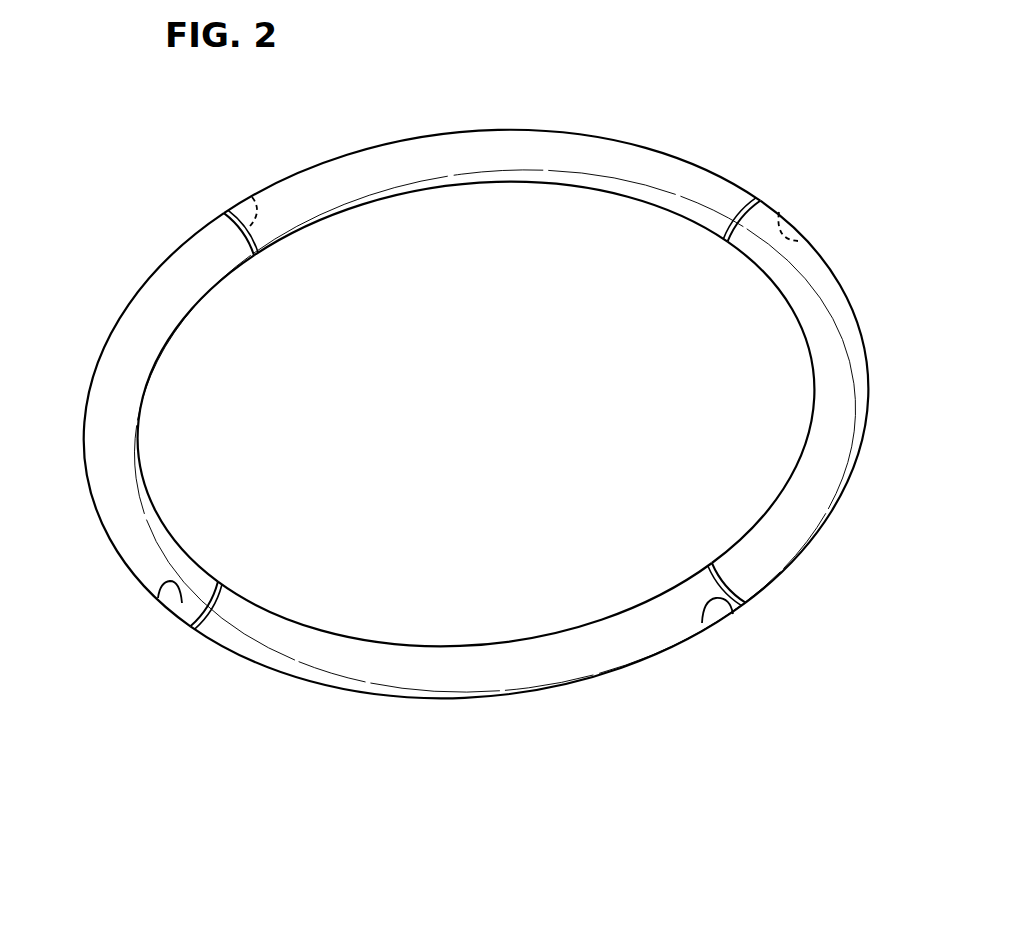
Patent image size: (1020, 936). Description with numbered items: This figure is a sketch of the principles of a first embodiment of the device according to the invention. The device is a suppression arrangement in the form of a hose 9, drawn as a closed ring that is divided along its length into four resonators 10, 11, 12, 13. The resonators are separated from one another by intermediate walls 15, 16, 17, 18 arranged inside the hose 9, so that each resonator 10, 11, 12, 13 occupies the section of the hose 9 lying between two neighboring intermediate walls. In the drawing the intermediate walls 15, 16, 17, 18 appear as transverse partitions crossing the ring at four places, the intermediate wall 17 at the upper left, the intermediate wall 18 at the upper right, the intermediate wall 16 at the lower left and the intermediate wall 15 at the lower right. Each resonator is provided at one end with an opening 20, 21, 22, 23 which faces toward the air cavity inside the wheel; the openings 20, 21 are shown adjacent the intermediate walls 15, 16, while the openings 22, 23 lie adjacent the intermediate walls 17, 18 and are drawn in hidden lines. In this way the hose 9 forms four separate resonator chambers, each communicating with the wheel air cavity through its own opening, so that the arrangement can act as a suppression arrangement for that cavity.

The hose 9 is at (597, 131).
The resonator 10 is at (846, 465).
The resonator 11 is at (562, 665).
The resonator 12 is at (105, 463).
The resonator 13 is at (387, 167).
The intermediate wall 15 is at (752, 605).
The intermediate wall 16 is at (186, 626).
The intermediate wall 17 is at (223, 214).
The intermediate wall 18 is at (760, 200).
The opening 20 is at (717, 615).
The opening 21 is at (165, 594).
The opening 22 is at (248, 208).
The opening 23 is at (797, 236).